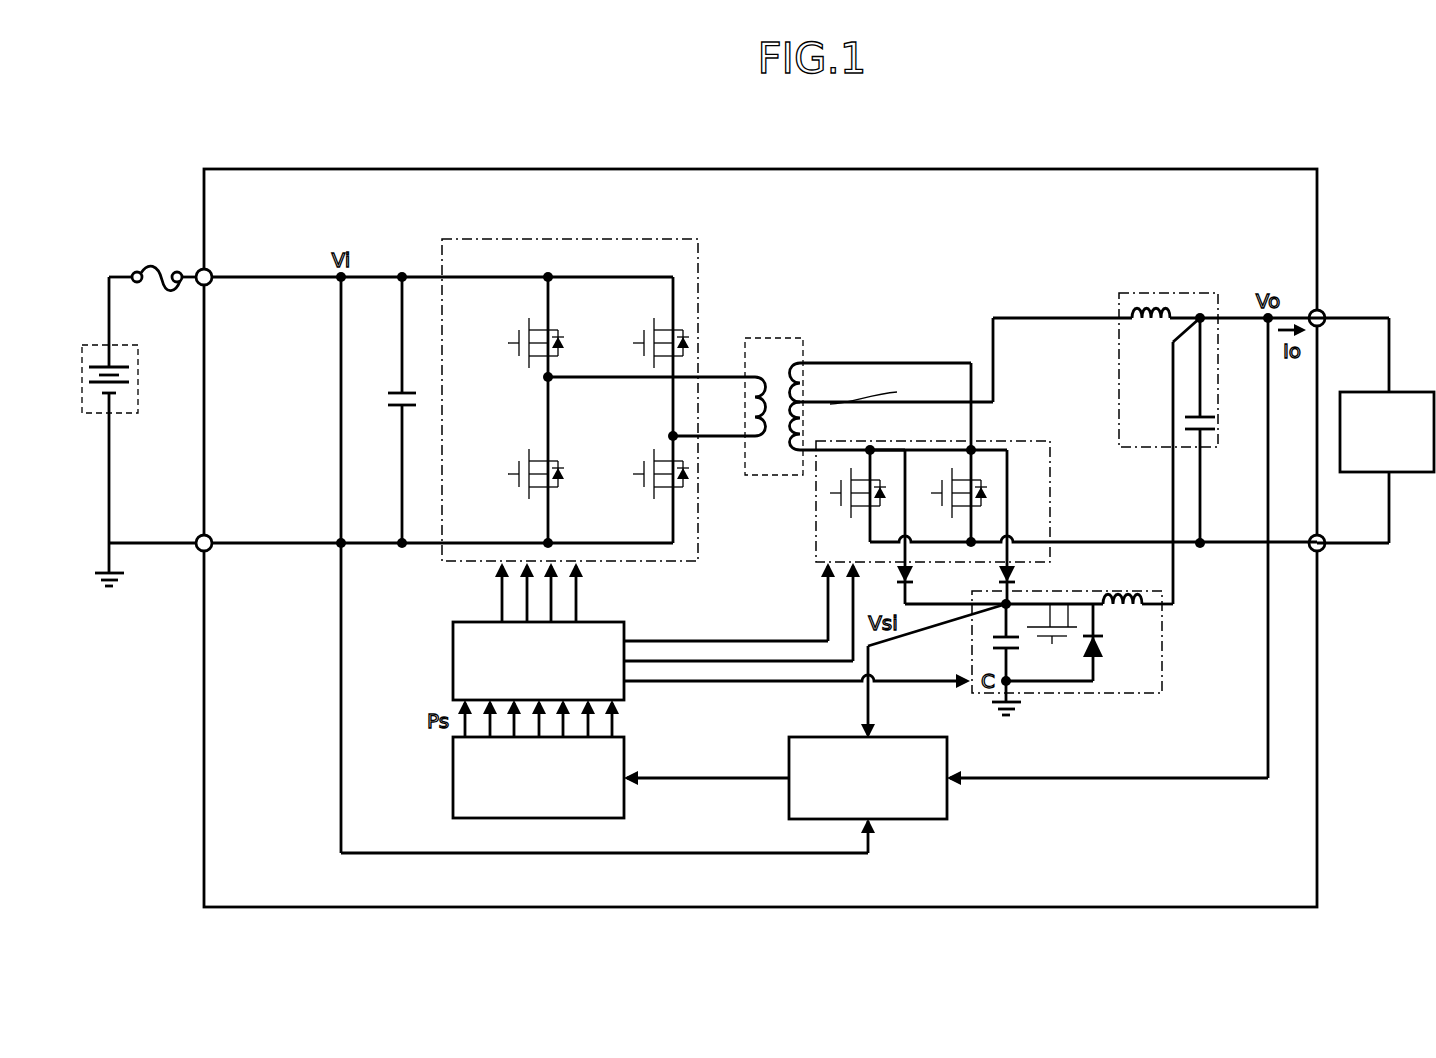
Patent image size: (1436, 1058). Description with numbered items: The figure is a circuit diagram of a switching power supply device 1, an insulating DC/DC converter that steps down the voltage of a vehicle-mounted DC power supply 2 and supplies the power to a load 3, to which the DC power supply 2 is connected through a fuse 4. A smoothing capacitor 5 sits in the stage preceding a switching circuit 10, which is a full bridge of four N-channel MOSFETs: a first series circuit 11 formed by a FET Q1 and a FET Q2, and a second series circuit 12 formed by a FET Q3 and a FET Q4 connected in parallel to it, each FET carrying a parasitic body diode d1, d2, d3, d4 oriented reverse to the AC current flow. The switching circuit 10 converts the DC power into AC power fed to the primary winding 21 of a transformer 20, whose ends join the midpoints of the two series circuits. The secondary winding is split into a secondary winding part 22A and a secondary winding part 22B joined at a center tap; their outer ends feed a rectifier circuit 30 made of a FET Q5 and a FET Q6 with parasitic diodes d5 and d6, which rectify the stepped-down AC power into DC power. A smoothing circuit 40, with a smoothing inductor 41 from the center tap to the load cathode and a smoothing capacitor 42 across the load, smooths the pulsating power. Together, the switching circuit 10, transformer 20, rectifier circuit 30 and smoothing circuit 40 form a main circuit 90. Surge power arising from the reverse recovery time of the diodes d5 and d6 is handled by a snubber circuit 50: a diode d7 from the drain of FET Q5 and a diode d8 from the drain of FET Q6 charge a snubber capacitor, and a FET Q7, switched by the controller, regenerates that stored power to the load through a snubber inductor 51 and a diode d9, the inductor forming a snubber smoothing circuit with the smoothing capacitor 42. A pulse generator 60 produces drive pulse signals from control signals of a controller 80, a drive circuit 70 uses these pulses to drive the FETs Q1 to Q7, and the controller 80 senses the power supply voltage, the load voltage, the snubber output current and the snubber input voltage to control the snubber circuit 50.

The switching power supply device 1 is at (824, 144).
The DC power supply 2 is at (140, 378).
The load 3 is at (1415, 391).
The fuse 4 is at (146, 270).
The smoothing capacitor 5 is at (396, 392).
The switching circuit 10 is at (562, 237).
The first series circuit 11 is at (534, 376).
The second series circuit 12 is at (663, 372).
The transformer 20 is at (814, 400).
The primary winding 21 is at (748, 408).
The secondary winding part 22A is at (805, 399).
The secondary winding part 22B is at (786, 432).
The rectifier circuit 30 is at (933, 475).
The smoothing circuit 40 is at (1169, 393).
The smoothing inductor 41 is at (1148, 326).
The smoothing capacitor 42 is at (1192, 418).
The snubber circuit 50 is at (1067, 670).
The snubber inductor 51 is at (1122, 612).
The pulse generator 60 is at (626, 752).
The drive circuit 70 is at (606, 620).
The controller 80 is at (912, 736).
The main circuit 90 is at (950, 245).
The FET Q1 is at (507, 343).
The FET Q2 is at (507, 474).
The FET Q3 is at (633, 343).
The FET Q4 is at (633, 474).
The FET Q5 is at (830, 493).
The FET Q6 is at (931, 493).
The FET Q7 is at (1052, 644).
The parasitic diode d1 is at (564, 345).
The parasitic diode d2 is at (564, 476).
The parasitic diode d3 is at (689, 345).
The parasitic diode d4 is at (689, 476).
The parasitic diode d5 is at (886, 495).
The parasitic diode d6 is at (987, 495).
The diode d7 is at (915, 578).
The diode d8 is at (1017, 578).
The diode d9 is at (1103, 650).